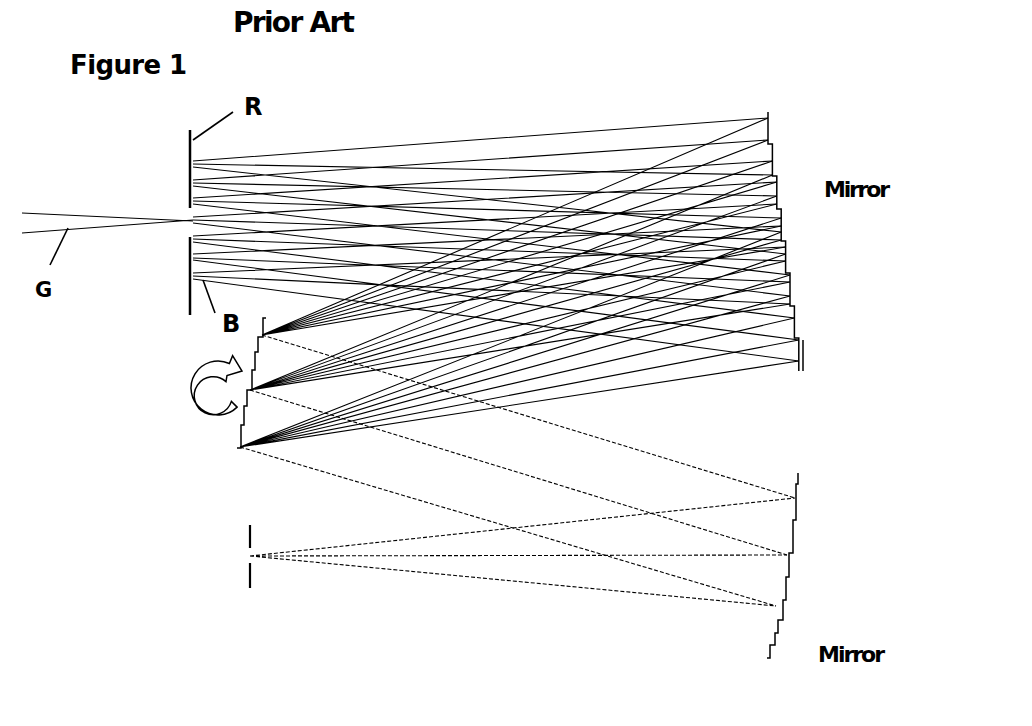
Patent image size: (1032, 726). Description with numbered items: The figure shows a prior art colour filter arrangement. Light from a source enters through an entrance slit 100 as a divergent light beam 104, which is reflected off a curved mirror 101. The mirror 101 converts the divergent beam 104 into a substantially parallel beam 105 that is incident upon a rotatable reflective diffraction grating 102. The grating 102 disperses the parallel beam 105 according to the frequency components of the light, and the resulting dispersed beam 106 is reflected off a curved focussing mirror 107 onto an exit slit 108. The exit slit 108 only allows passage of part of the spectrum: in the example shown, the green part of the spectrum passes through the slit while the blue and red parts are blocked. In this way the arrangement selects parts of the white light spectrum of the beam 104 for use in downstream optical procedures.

The entrance slit 100 is at (250, 583).
The curved mirror 101 is at (768, 660).
The rotatable reflective diffraction grating 102 is at (240, 448).
The divergent light beam 104 is at (470, 577).
The substantially parallel beam 105 is at (592, 433).
The dispersed beam 106 is at (697, 358).
The curved focussing mirror 107 is at (800, 308).
The exit slit 108 is at (182, 298).